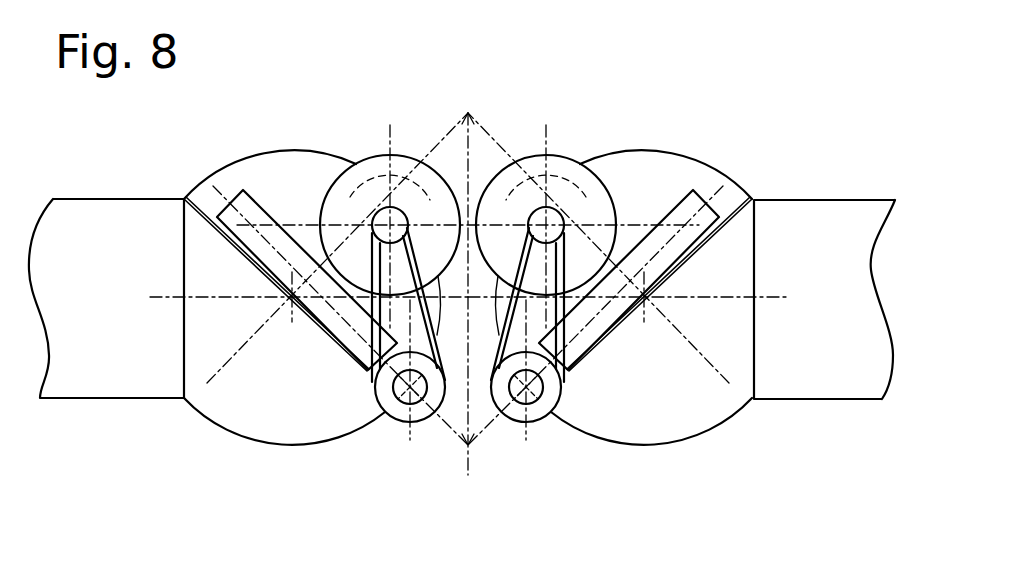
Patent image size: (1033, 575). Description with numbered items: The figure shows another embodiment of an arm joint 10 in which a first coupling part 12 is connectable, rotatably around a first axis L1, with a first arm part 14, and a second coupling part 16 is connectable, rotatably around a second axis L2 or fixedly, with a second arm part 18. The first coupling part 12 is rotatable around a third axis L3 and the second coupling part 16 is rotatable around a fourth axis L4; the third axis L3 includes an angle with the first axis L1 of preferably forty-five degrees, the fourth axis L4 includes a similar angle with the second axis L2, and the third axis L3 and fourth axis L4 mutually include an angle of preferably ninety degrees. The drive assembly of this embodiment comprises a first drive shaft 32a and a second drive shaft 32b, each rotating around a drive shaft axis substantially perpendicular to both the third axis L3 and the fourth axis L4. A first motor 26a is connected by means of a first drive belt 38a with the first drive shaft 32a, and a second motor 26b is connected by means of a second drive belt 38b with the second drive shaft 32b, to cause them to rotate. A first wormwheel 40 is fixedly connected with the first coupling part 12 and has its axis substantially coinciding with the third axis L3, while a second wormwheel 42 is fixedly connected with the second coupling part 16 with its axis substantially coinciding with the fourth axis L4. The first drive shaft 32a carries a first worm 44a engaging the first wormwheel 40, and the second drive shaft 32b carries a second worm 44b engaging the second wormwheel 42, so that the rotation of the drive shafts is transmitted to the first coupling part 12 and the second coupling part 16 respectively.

The arm joint 10 is at (648, 97).
The first coupling part 12 is at (257, 405).
The first arm part 14 is at (128, 356).
The second coupling part 16 is at (679, 405).
The second arm part 18 is at (825, 356).
The first motor 26a is at (346, 198).
The second motor 26b is at (590, 198).
The first drive shaft 32a is at (407, 400).
The second drive shaft 32b is at (523, 398).
The first drive belt 38a is at (373, 265).
The second drive belt 38b is at (563, 265).
The first wormwheel 40 is at (229, 200).
The second wormwheel 42 is at (707, 195).
The first worm 44a is at (420, 412).
The second worm 44b is at (535, 412).
The first axis L1 is at (150, 297).
The second axis L2 is at (776, 298).
The third axis L3 is at (222, 370).
The fourth axis L4 is at (714, 370).